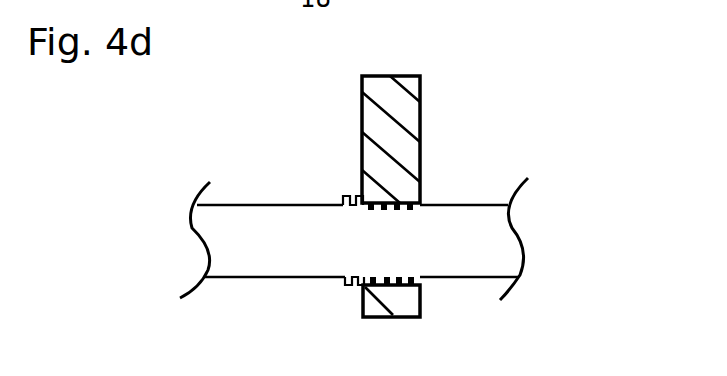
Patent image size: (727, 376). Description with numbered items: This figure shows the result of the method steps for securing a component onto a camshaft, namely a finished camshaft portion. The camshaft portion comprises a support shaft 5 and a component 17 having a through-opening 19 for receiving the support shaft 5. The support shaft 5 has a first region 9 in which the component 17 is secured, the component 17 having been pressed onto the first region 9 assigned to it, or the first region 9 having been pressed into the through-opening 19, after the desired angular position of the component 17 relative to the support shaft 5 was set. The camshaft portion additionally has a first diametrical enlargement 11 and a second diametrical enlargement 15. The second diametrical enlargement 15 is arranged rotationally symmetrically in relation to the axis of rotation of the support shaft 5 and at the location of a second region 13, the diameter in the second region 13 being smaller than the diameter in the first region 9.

The support shaft 5 is at (483, 225).
The first region 9 is at (408, 290).
The first diametrical enlargement 11 is at (362, 287).
The second region 13 is at (338, 192).
The second diametrical enlargement 15 is at (345, 282).
The component 17 is at (393, 100).
The through-opening 19 is at (423, 200).